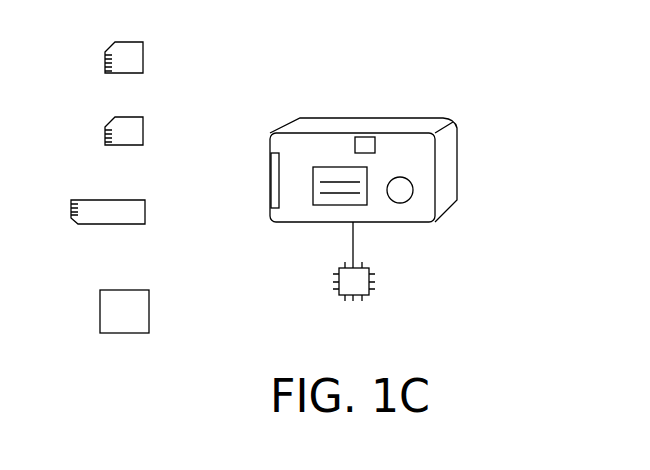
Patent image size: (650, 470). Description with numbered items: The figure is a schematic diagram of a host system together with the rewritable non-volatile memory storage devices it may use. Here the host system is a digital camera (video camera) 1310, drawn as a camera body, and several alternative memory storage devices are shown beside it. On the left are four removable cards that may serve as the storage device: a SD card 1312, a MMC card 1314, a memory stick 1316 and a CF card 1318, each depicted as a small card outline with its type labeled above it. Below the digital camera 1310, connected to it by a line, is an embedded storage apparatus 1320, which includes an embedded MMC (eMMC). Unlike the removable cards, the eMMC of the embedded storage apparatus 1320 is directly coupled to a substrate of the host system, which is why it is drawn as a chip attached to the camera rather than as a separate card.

The digital camera 1310 is at (458, 155).
The SD card 1312 is at (145, 51).
The MMC card 1314 is at (145, 125).
The memory stick 1316 is at (147, 212).
The CF card 1318 is at (150, 305).
The embedded storage apparatus 1320 is at (376, 284).